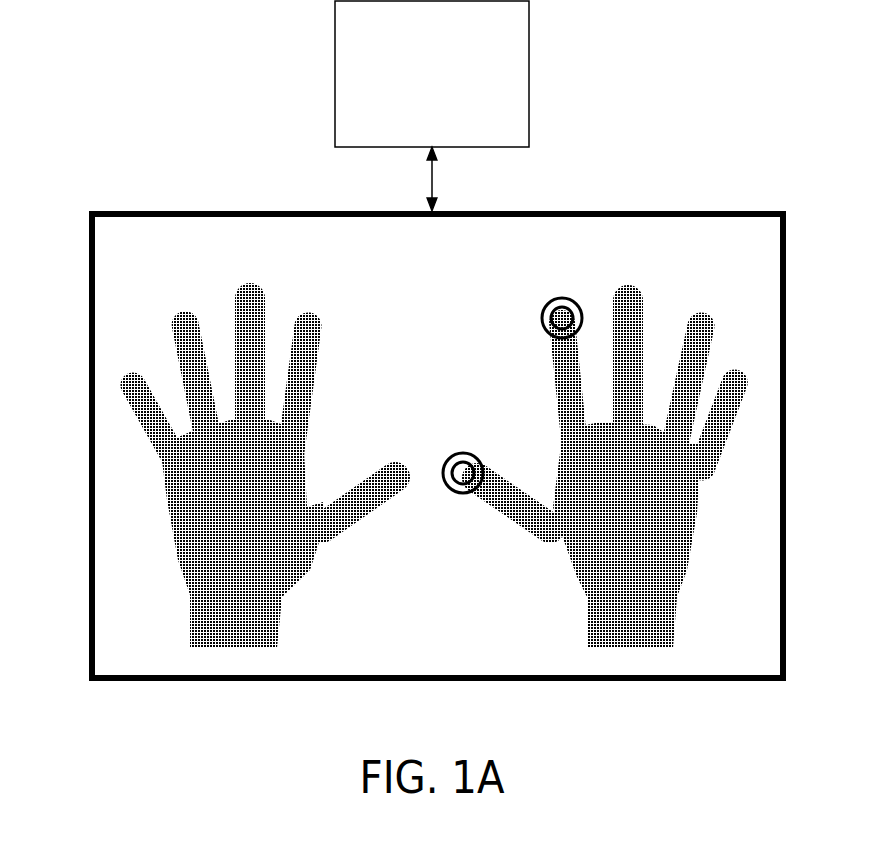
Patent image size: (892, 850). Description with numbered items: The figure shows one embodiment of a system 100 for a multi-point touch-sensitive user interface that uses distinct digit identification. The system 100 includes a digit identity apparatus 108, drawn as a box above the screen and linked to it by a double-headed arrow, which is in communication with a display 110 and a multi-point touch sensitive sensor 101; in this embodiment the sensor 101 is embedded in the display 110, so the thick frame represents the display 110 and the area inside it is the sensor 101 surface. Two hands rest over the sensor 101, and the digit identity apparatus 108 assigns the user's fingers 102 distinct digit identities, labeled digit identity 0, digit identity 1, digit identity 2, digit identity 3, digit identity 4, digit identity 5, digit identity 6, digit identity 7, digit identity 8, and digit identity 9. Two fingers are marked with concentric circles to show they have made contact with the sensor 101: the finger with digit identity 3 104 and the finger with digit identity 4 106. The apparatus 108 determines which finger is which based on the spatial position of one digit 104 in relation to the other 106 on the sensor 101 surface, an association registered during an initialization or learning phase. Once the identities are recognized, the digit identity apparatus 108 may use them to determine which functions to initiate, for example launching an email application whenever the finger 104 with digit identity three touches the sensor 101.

The system 100 is at (102, 189).
The multi-point touch sensitive sensor 101 is at (148, 257).
The fingers 102 is at (436, 443).
The finger with digit identity 3 104 is at (536, 313).
The finger with digit identity 4 106 is at (455, 500).
The digit identity apparatus 108 is at (449, 123).
The display 110 is at (92, 232).
The digit identity 0 is at (727, 401).
The digit identity 1 is at (689, 368).
The digit identity 2 is at (628, 357).
The digit identity 3 is at (568, 361).
The digit identity 4 is at (507, 473).
The digit identity 5 is at (359, 472).
The digit identity 6 is at (302, 363).
The digit identity 7 is at (249, 355).
The digit identity 8 is at (197, 365).
The digit identity 9 is at (153, 403).